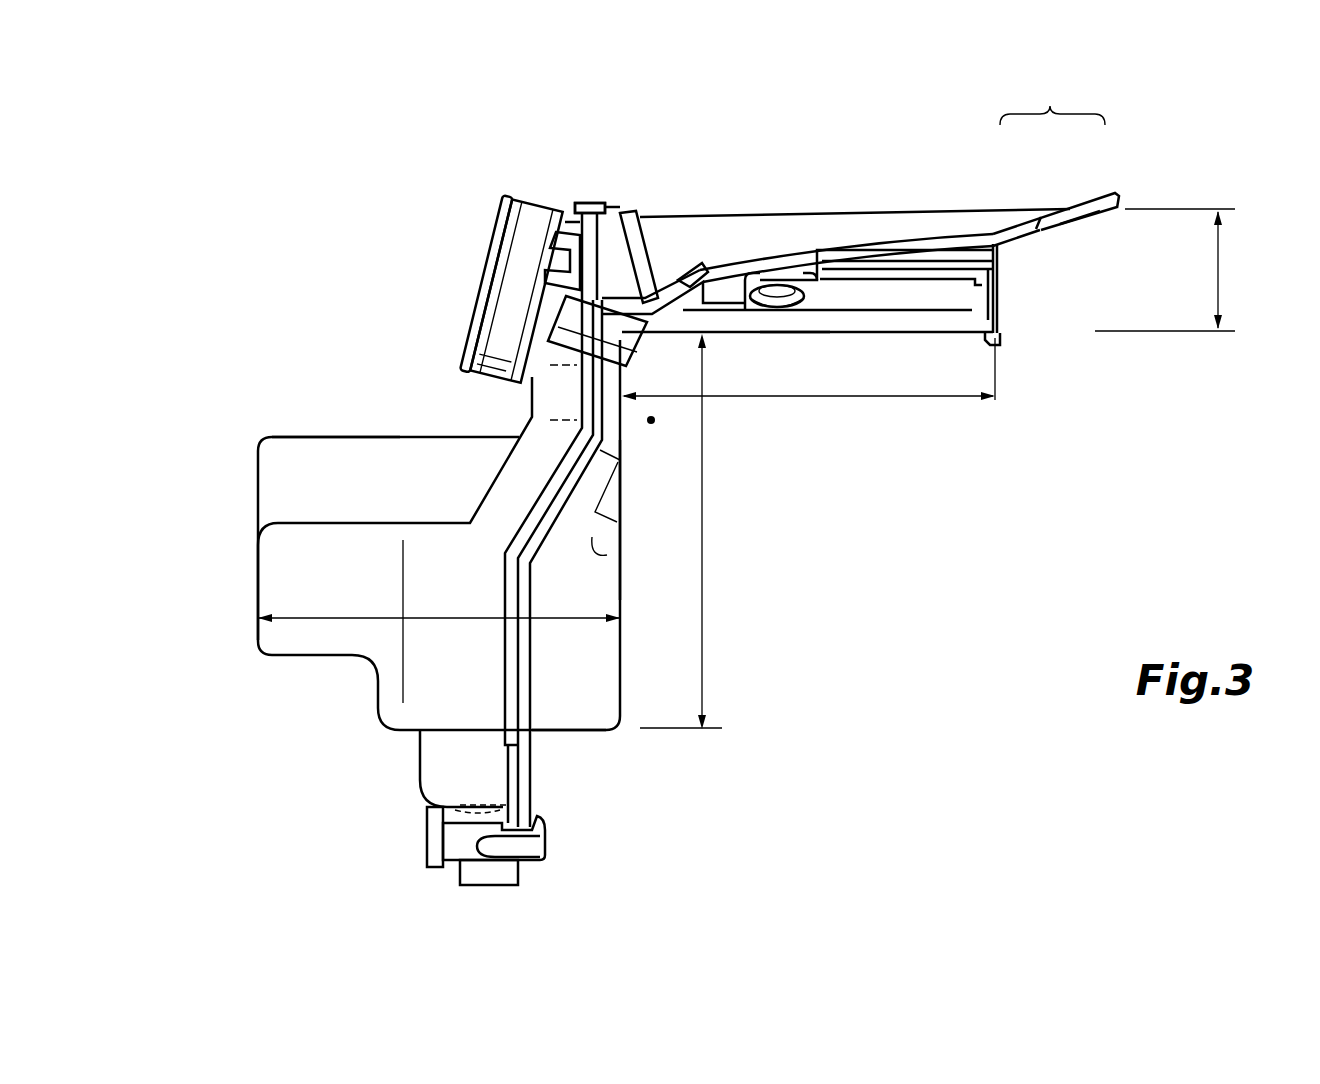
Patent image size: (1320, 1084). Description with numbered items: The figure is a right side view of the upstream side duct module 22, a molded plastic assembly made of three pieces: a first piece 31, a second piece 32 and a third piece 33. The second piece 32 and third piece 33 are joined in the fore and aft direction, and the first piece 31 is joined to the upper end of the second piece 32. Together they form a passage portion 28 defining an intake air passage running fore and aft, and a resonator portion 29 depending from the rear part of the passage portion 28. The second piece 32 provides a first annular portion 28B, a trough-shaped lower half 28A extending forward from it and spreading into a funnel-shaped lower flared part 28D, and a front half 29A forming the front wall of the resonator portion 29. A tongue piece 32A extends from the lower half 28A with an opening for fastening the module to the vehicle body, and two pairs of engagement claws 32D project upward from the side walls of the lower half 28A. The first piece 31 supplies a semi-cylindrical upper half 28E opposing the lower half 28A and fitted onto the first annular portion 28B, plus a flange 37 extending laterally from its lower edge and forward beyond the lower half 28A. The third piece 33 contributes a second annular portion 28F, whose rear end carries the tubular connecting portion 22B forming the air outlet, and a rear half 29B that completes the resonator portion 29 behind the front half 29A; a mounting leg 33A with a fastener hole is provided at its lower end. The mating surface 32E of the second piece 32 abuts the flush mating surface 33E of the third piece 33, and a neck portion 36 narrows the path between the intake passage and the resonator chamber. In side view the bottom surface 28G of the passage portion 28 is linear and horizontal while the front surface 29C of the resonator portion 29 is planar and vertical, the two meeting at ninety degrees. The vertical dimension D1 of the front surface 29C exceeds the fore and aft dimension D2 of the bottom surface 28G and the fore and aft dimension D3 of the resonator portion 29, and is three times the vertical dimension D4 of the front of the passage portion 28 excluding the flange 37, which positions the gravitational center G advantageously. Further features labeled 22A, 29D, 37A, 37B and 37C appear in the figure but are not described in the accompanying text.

The upstream side duct module 22 is at (774, 133).
The wall portion 22A is at (999, 288).
The tubular connecting portion 22B is at (527, 215).
The passage portion 28 is at (664, 195).
The lower half 28A is at (921, 334).
The first annular portion 28B is at (608, 213).
The lower flared part 28D is at (1002, 337).
The upper half 28E is at (945, 232).
The second annular portion 28F is at (573, 210).
The bottom surface 28G is at (784, 333).
The resonator portion 29 is at (336, 385).
The front half 29A is at (597, 725).
The rear half 29B is at (258, 587).
The front surface 29C is at (622, 505).
The upper chamber wall 29D is at (258, 492).
The first piece 31 is at (867, 206).
The second piece 32 is at (622, 732).
The tongue piece 32A is at (553, 320).
The engagement claws 32D is at (692, 267).
The mating surface 32E is at (519, 742).
The third piece 33 is at (303, 437).
The mounting leg 33A is at (455, 862).
The mating surface 33E is at (512, 700).
The neck portion 36 is at (547, 405).
The flange 37 is at (1056, 156).
The first flange portion 37A is at (1000, 217).
The second flange portion 37B is at (1094, 203).
The flange edge 37C is at (1073, 230).
The gravitational center G is at (654, 424).
The vertical dimension D1 is at (705, 508).
The fore and aft dimension D2 is at (848, 397).
The fore and aft dimension D3 is at (437, 618).
The vertical dimension D4 is at (1177, 270).